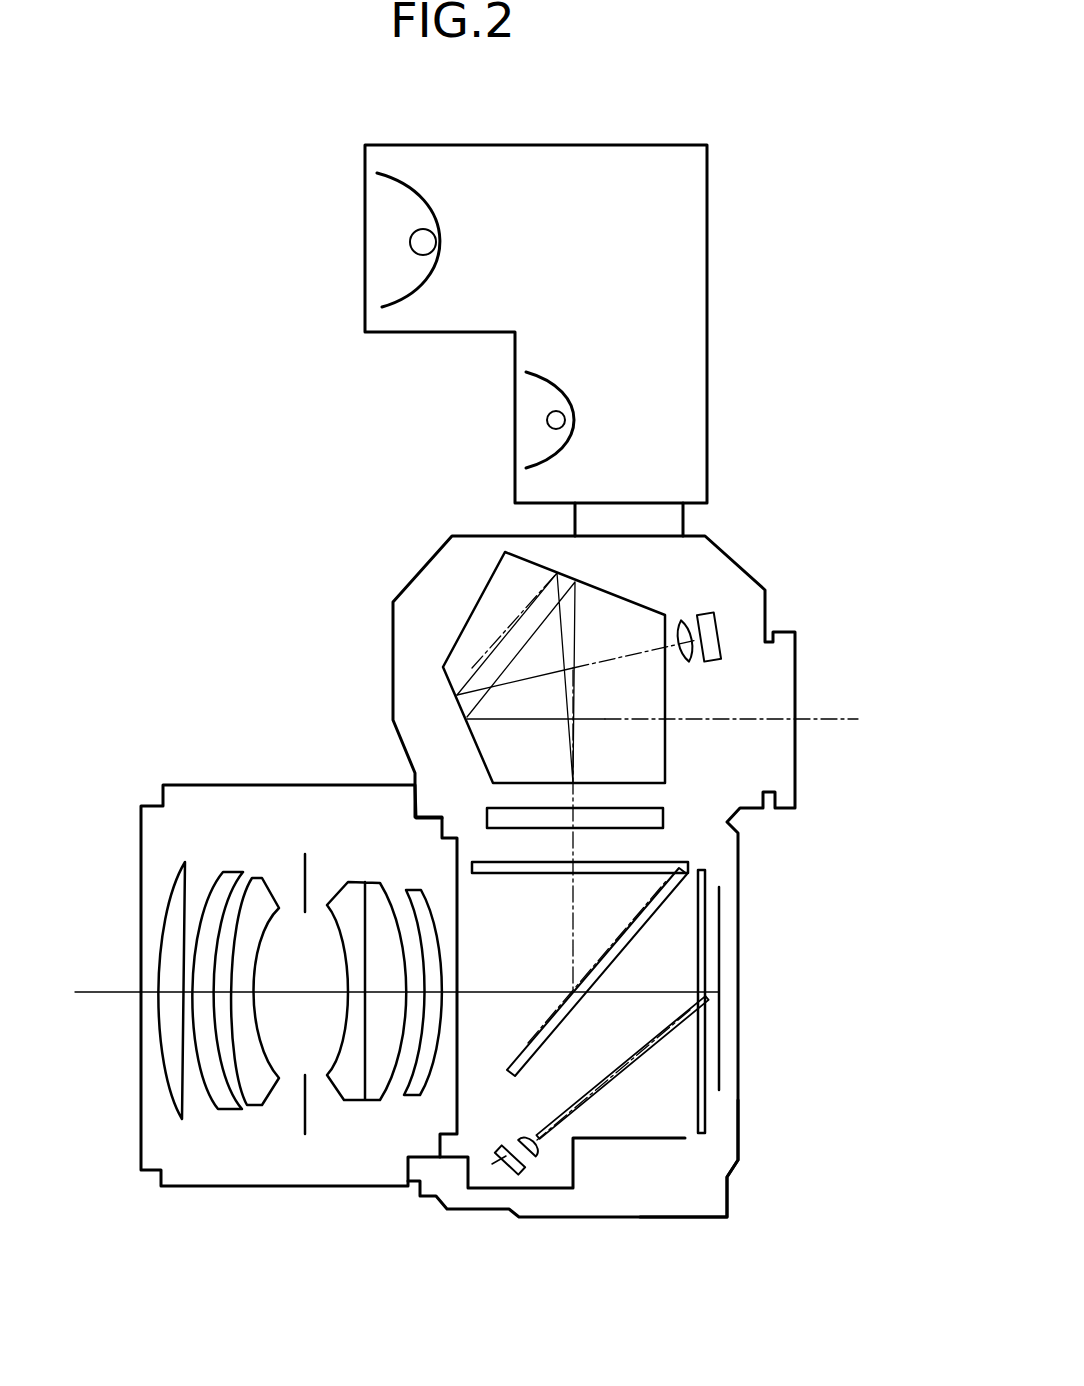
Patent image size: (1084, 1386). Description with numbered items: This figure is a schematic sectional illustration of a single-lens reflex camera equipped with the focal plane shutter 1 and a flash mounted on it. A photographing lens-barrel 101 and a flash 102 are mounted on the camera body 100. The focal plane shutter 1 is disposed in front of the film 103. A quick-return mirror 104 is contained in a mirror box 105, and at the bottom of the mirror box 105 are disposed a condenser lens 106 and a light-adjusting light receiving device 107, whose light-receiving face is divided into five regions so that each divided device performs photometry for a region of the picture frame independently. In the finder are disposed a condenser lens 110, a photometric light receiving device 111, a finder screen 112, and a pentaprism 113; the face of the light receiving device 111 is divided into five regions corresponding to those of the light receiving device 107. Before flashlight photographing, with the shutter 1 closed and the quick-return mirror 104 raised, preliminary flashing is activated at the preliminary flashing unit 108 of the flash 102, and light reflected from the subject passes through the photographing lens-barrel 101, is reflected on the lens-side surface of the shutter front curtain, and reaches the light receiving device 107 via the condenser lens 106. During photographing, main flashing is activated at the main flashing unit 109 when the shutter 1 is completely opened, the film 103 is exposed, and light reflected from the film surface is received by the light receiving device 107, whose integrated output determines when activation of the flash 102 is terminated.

The focal plane shutter 1 is at (705, 1113).
The camera body 100 is at (392, 640).
The photographing lens-barrel 101 is at (257, 1191).
The flash 102 is at (707, 265).
The film 103 is at (719, 1057).
The quick-return mirror 104 is at (668, 860).
The mirror box 105 is at (603, 1040).
The condenser lens 106 is at (537, 1158).
The light-adjusting light receiving device 107 is at (510, 1178).
The preliminary flashing unit 108 is at (547, 420).
The main flashing unit 109 is at (410, 243).
The condenser lens 110 is at (687, 657).
The photometric light receiving device 111 is at (720, 648).
The finder screen 112 is at (493, 810).
The pentaprism 113 is at (478, 628).